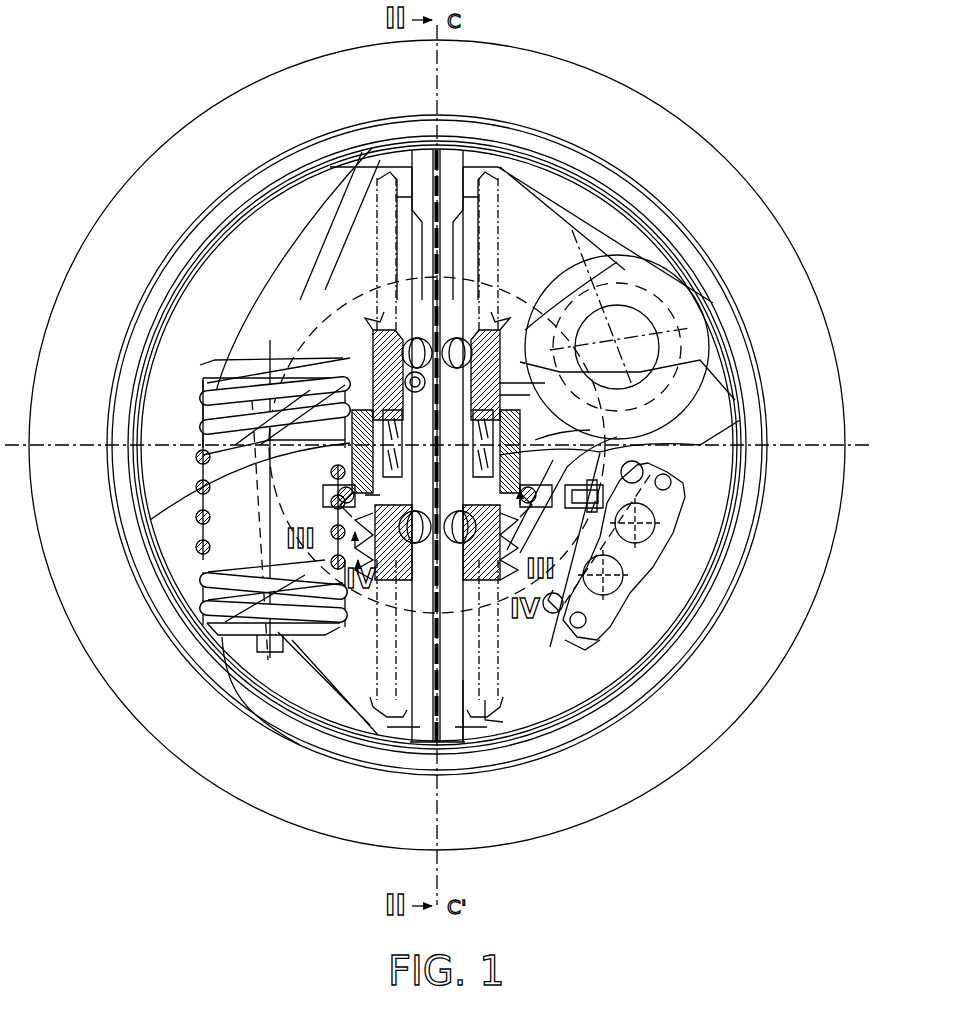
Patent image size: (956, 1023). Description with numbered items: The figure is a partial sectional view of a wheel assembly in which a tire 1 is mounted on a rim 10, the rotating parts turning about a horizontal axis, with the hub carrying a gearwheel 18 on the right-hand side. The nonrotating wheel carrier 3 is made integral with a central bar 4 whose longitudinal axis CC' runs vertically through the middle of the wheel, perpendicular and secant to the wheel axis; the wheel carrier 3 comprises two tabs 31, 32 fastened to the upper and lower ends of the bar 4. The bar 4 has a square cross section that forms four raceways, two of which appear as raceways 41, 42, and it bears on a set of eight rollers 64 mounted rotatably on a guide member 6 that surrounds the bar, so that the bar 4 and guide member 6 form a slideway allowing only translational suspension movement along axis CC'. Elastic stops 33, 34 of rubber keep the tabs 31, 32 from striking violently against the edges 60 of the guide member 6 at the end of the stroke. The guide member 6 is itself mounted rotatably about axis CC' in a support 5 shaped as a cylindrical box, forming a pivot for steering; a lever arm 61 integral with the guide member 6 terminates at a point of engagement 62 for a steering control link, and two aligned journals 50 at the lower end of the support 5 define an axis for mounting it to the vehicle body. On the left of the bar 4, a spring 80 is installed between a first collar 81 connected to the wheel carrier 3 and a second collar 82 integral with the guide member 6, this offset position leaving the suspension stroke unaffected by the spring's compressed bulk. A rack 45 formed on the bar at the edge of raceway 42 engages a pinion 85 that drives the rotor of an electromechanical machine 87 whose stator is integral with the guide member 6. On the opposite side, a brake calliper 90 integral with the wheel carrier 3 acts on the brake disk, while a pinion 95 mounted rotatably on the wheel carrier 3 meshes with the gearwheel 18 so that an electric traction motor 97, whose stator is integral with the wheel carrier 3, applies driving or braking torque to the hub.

The tire 1 is at (493, 63).
The wheel carrier 3 is at (585, 150).
The bar 4 is at (517, 200).
The support 5 is at (196, 470).
The guide member 6 is at (480, 242).
The rim 10 is at (635, 160).
The gearwheel 18 is at (557, 327).
The tab 31 is at (393, 160).
The tab 32 is at (403, 732).
The stop 33 is at (410, 337).
The stop 34 is at (488, 707).
The raceway 41 is at (457, 638).
The raceway 42 is at (397, 600).
The rack 45 is at (410, 260).
The journals 50 is at (338, 488).
The edges 60 is at (385, 272).
The lever arm 61 is at (673, 427).
The point of engagement 62 is at (673, 483).
The rollers 64 is at (393, 327).
The spring 80 is at (200, 393).
The first collar 81 is at (226, 626).
The second collar 82 is at (238, 390).
The pinion 85 is at (330, 335).
The electromechanical machine 87 is at (680, 390).
The brake calliper 90 is at (670, 560).
The pinion 95 is at (640, 310).
The electric motor 97 is at (707, 353).